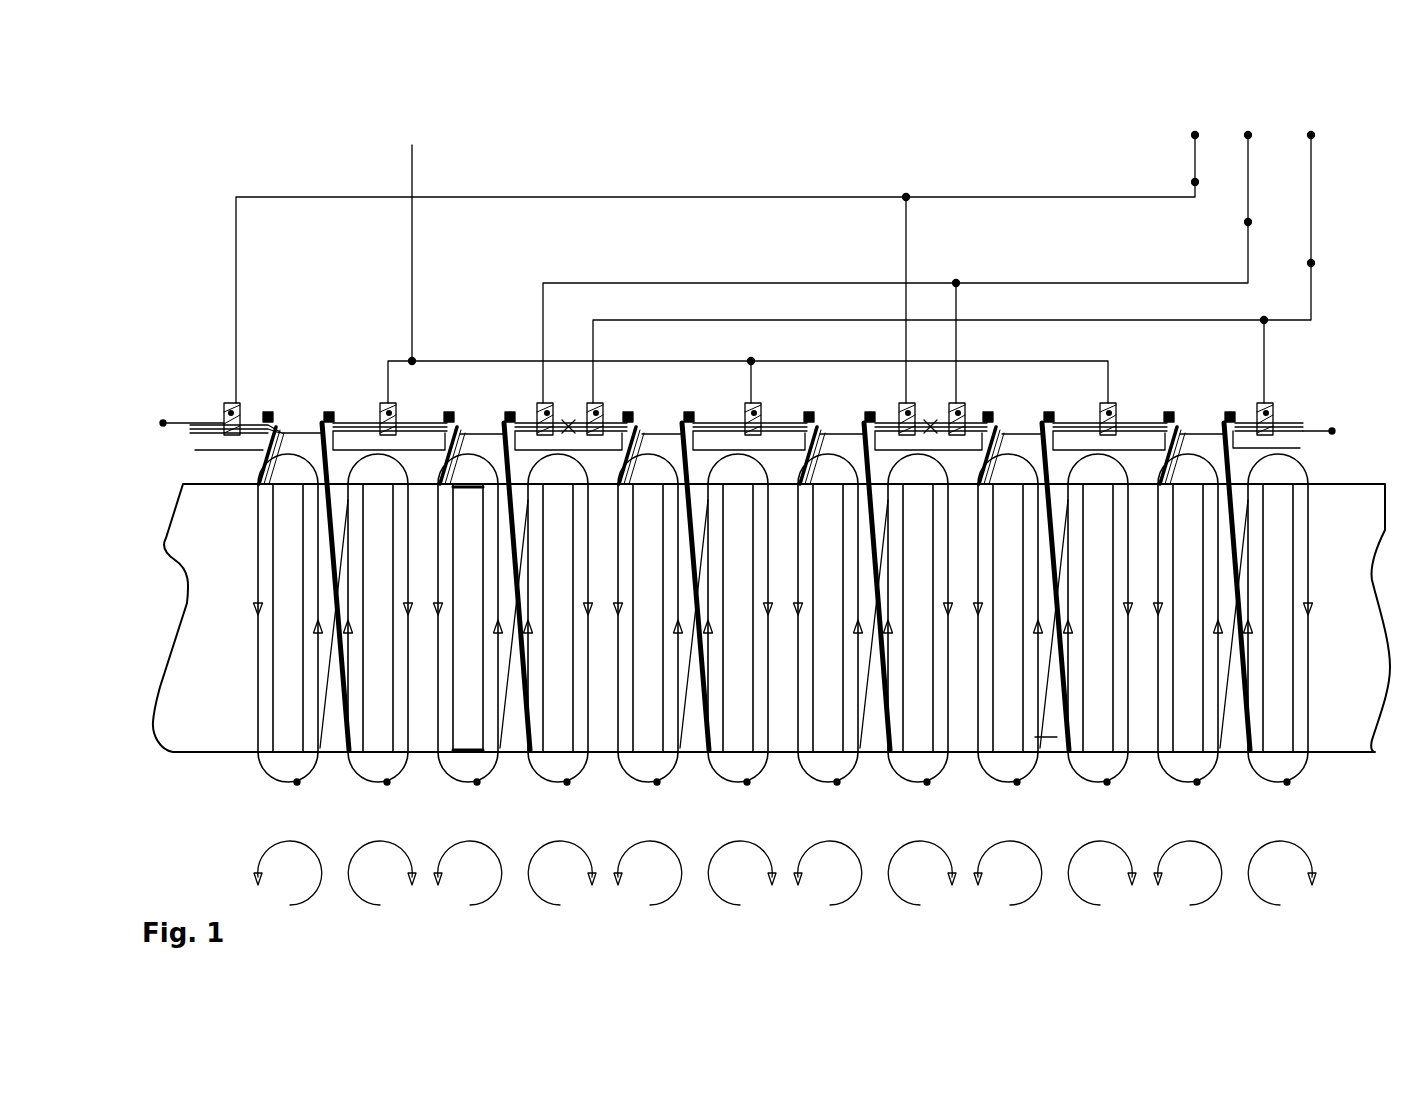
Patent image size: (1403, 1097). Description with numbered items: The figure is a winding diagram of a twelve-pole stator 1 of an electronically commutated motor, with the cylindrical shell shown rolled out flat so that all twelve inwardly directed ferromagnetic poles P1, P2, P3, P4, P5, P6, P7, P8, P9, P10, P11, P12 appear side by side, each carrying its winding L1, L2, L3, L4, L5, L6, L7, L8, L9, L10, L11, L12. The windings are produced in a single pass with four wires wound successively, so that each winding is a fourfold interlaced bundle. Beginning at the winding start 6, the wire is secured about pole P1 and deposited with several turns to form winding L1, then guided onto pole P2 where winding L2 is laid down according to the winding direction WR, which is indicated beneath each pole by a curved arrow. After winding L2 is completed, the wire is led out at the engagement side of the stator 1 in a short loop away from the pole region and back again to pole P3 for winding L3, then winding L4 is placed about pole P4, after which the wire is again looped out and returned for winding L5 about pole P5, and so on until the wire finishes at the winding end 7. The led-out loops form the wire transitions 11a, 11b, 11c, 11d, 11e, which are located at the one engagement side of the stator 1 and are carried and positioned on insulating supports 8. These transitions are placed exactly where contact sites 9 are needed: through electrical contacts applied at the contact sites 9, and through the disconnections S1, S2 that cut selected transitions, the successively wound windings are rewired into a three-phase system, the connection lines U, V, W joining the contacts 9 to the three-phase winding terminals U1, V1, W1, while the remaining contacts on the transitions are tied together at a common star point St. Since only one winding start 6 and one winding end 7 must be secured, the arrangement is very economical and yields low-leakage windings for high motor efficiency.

The stator 1 is at (213, 643).
The winding start 6 is at (163, 423).
The winding end 7 is at (1333, 430).
The insulating support 8 is at (1228, 411).
The contact site 9 is at (1270, 402).
The wire transition 11a is at (352, 418).
The wire transition 11b is at (557, 418).
The wire transition 11c is at (722, 418).
The wire transition 11d is at (937, 418).
The wire transition 11e is at (1073, 418).
The pole P1 is at (298, 699).
The pole P2 is at (388, 699).
The pole P3 is at (478, 699).
The pole P4 is at (568, 699).
The pole P5 is at (658, 699).
The pole P6 is at (748, 699).
The pole P7 is at (838, 699).
The pole P8 is at (928, 699).
The pole P9 is at (1018, 699).
The pole P10 is at (1118, 699).
The pole P11 is at (1208, 699).
The pole P12 is at (1298, 699).
The winding L1 is at (299, 785).
The winding L2 is at (389, 785).
The winding L3 is at (479, 785).
The winding L4 is at (569, 785).
The winding L5 is at (659, 785).
The winding L6 is at (749, 785).
The winding L7 is at (839, 785).
The winding L8 is at (929, 785).
The winding L9 is at (1019, 785).
The winding L10 is at (1109, 785).
The winding L11 is at (1199, 785).
The winding L12 is at (1289, 785).
The disconnection S1 is at (570, 400).
The disconnection S2 is at (931, 400).
The star point St is at (748, 262).
The connection line U is at (1195, 182).
The connection line V is at (1248, 222).
The connection line W is at (1311, 263).
The winding terminal U1 is at (1195, 134).
The winding terminal V1 is at (1248, 134).
The winding terminal W1 is at (1311, 134).
The winding direction WR is at (729, 873).